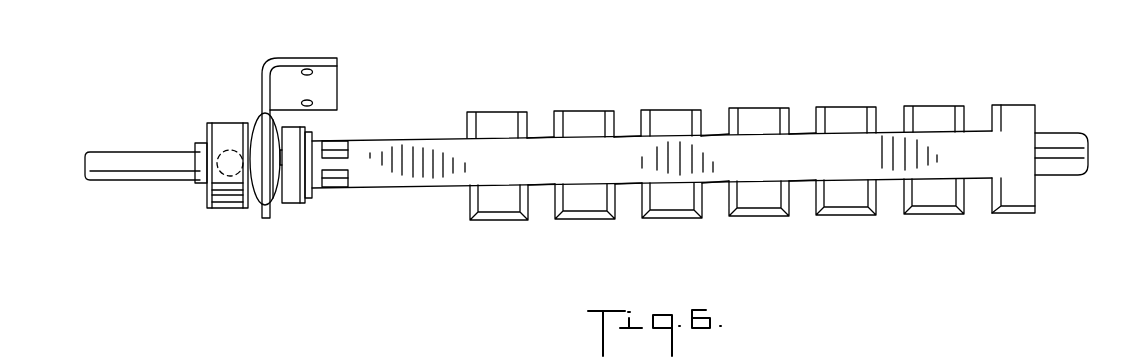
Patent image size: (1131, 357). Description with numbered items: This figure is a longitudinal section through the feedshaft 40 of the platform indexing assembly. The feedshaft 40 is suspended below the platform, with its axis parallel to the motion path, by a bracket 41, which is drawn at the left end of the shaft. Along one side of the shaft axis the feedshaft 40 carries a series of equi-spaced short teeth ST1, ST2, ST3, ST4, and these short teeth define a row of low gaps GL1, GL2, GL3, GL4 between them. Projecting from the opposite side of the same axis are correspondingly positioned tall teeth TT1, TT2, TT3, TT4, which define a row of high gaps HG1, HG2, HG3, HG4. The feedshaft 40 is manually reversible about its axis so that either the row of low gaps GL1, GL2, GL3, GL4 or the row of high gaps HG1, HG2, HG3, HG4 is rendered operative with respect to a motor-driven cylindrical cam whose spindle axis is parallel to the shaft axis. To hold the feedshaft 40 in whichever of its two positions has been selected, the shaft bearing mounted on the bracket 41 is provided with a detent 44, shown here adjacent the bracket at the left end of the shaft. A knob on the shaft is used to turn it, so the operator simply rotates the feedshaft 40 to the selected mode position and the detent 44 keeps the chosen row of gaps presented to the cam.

The feedshaft 40 is at (422, 148).
The bracket 41 is at (328, 82).
The detent 44 is at (257, 118).
The short tooth ST1 is at (523, 113).
The short tooth ST2 is at (610, 112).
The short tooth ST3 is at (695, 112).
The short tooth ST4 is at (795, 93).
The low gap GL1 is at (547, 115).
The low gap GL2 is at (630, 115).
The low gap GL3 is at (718, 118).
The low gap GL4 is at (807, 117).
The tall tooth TT1 is at (495, 213).
The tall tooth TT2 is at (590, 218).
The tall tooth TT3 is at (672, 220).
The tall tooth TT4 is at (762, 220).
The high gap HG1 is at (542, 210).
The high gap HG2 is at (632, 212).
The high gap HG3 is at (717, 213).
The high gap HG4 is at (807, 212).